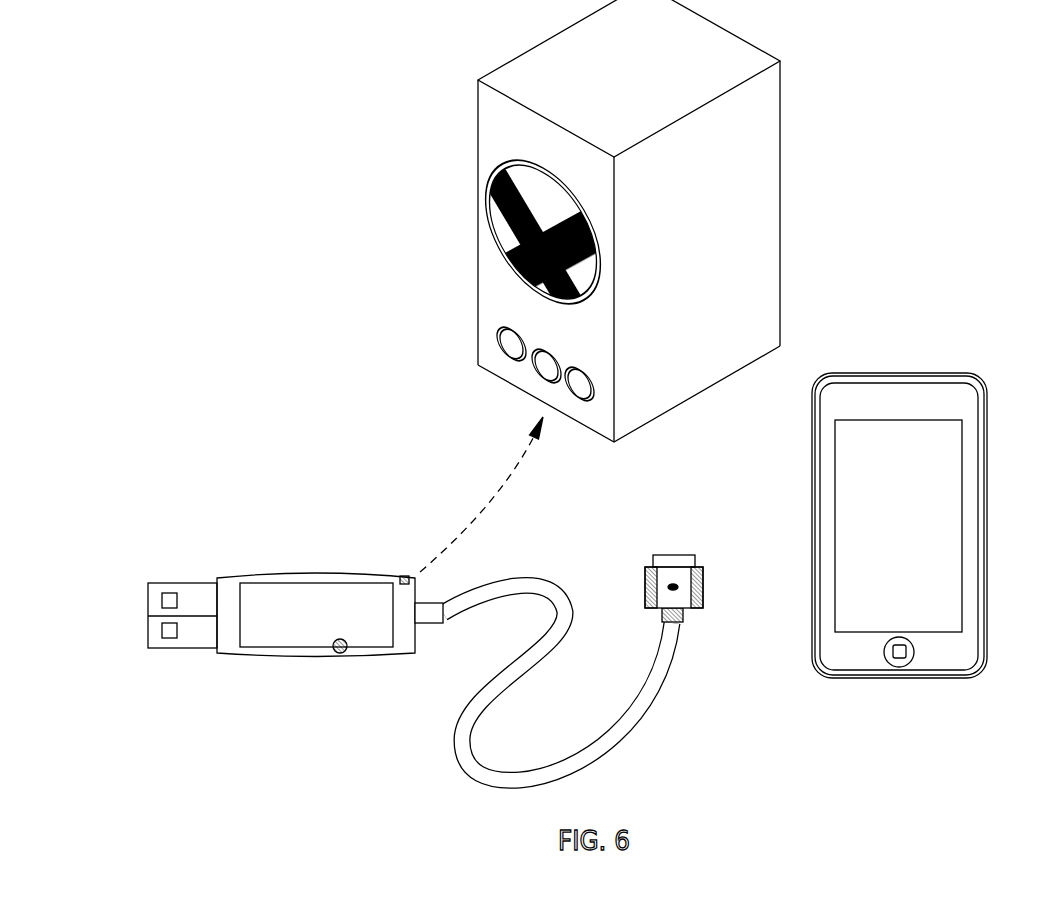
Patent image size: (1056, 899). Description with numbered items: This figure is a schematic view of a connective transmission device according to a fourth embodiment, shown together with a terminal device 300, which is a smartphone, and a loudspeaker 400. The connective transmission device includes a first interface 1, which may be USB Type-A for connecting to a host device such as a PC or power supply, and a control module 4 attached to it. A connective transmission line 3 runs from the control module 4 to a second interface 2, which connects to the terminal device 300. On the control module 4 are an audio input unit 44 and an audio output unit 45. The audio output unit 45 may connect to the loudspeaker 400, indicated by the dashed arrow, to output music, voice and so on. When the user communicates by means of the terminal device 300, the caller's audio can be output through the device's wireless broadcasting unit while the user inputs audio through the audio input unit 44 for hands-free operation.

The first interface 1 is at (195, 638).
The second interface 2 is at (703, 570).
The connective transmission line 3 is at (623, 748).
The control module 4 is at (290, 592).
The audio input unit 44 is at (340, 653).
The audio output unit 45 is at (405, 576).
The terminal device 300 is at (970, 408).
The loudspeaker 400 is at (755, 188).